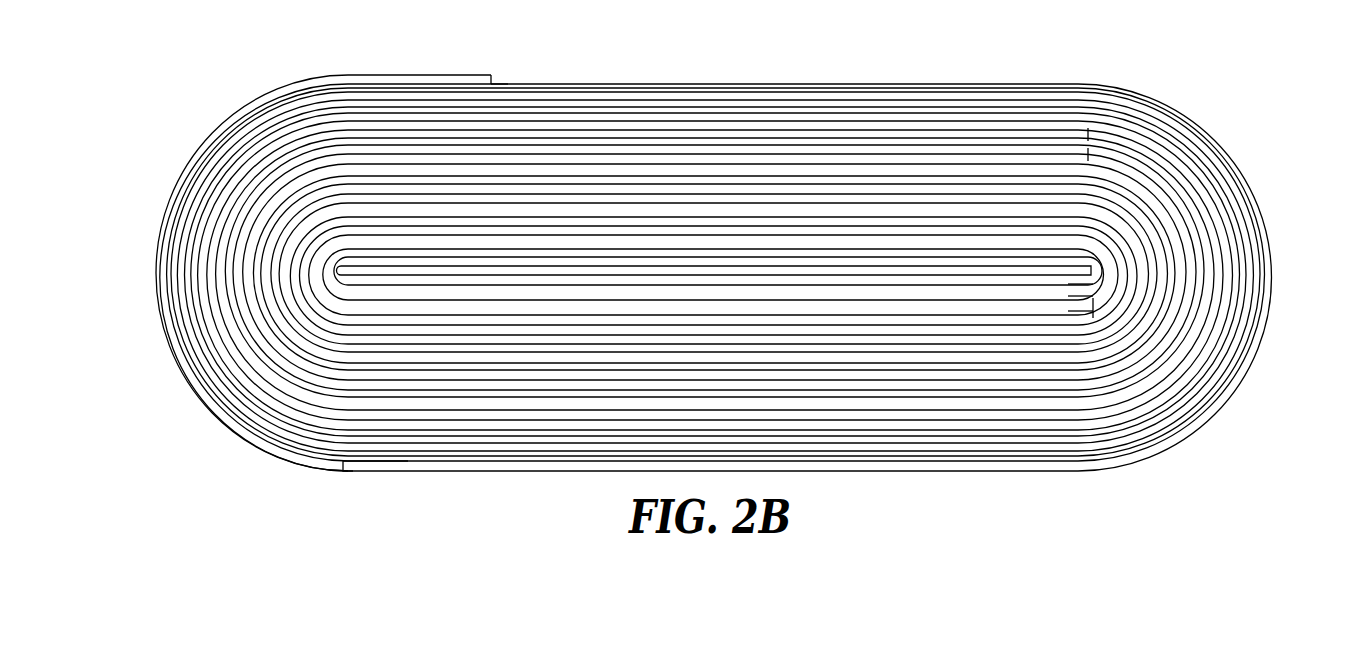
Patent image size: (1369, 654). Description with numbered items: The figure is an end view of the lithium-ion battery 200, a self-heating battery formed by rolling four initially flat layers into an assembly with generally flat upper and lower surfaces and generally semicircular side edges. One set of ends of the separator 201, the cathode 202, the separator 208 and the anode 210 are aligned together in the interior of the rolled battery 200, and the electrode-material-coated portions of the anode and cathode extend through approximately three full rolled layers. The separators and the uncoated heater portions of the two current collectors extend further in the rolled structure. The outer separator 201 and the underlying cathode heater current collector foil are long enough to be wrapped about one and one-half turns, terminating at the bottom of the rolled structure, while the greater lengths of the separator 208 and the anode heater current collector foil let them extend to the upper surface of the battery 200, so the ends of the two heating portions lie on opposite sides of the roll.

The lithium-ion battery 200 is at (176, 122).
The separator 208 is at (386, 67).
The separator 201 is at (392, 464).
The cathode 202 is at (1090, 275).
The anode 210 is at (1086, 303).